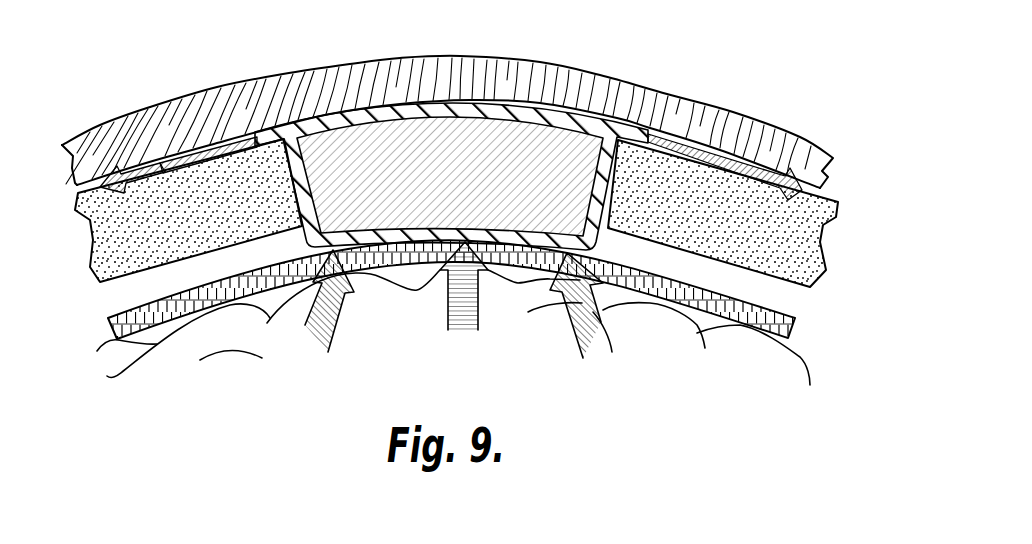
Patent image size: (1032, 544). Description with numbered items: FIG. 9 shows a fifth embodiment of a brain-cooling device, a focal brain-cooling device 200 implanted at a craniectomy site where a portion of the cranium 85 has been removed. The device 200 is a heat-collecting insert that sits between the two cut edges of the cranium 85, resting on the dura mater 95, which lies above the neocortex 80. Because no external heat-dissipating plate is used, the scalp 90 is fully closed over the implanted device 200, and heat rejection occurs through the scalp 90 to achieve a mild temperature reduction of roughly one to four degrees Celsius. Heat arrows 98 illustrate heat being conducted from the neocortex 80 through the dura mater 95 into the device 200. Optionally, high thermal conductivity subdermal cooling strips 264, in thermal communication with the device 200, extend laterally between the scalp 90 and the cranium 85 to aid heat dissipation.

The scalp 90 is at (740, 118).
The subdermal cooling strips 264 is at (212, 142).
The focal brain-cooling device 200 is at (470, 184).
The cranium 85 is at (92, 236).
The dura mater 95 is at (797, 320).
The heat arrows 98 is at (332, 333).
The neocortex 80 is at (800, 357).